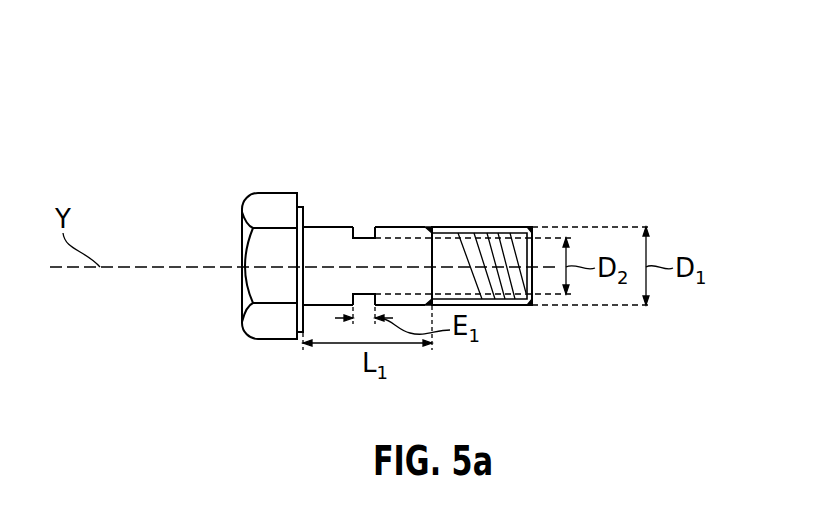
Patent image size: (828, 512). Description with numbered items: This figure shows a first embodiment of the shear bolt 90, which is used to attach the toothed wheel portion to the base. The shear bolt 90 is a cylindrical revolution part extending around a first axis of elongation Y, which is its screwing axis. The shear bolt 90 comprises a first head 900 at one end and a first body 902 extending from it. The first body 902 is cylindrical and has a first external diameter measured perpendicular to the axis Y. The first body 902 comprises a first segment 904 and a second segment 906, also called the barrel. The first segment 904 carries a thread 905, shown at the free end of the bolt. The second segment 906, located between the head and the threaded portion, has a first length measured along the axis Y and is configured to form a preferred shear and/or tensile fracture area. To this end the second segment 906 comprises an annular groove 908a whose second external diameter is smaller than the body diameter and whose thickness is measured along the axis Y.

The shear bolt 90 is at (243, 222).
The first head 900 is at (267, 217).
The first body 902 is at (482, 56).
The first segment 904 is at (452, 258).
The thread 905 is at (502, 234).
The second segment 906 is at (407, 248).
The annular groove 908a is at (365, 235).